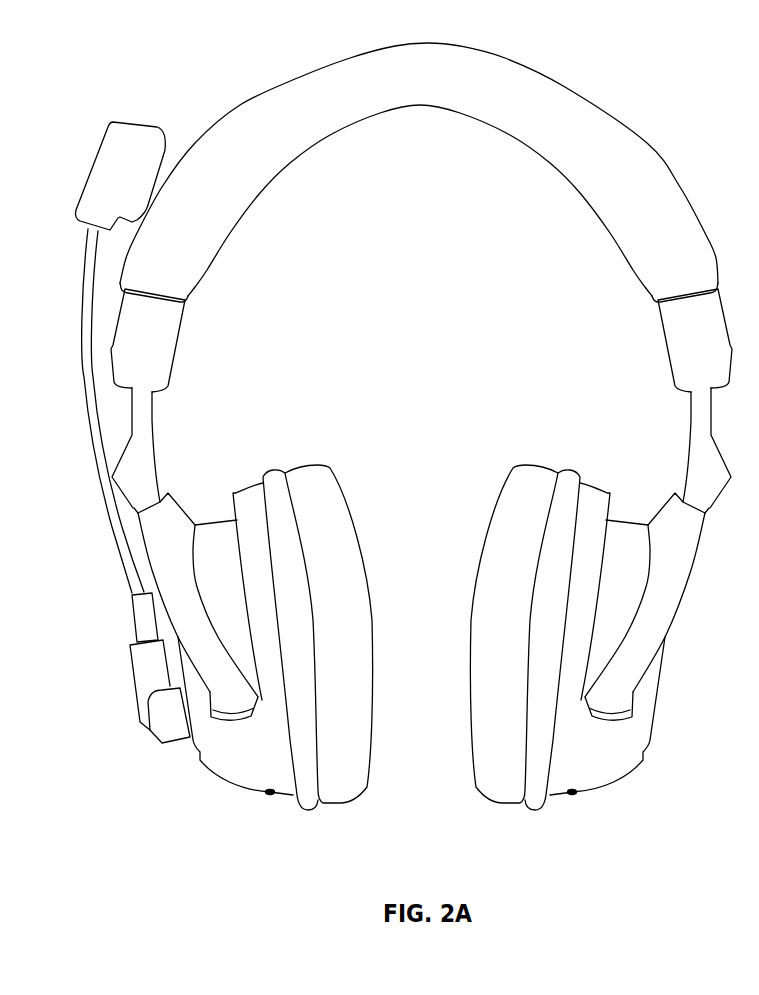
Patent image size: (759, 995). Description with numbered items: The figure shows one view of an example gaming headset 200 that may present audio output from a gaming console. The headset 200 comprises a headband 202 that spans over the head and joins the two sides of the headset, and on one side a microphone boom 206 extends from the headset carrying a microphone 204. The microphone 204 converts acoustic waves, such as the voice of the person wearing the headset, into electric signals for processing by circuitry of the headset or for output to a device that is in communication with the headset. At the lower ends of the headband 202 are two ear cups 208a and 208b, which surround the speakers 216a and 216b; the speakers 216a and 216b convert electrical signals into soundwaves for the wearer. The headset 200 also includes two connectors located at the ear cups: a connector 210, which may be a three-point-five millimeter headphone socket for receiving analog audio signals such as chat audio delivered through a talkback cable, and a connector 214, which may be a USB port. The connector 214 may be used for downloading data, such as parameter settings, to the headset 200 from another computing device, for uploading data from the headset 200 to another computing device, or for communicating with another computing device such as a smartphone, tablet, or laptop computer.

The headset 200 is at (178, 71).
The headband 202 is at (580, 80).
The microphone 204 is at (92, 165).
The microphone boom 206 is at (92, 381).
The ear cup 208a is at (330, 467).
The ear cup 208b is at (520, 467).
The connector 210 is at (268, 797).
The connector 214 is at (575, 797).
The speaker 216a is at (380, 594).
The speaker 216b is at (465, 560).